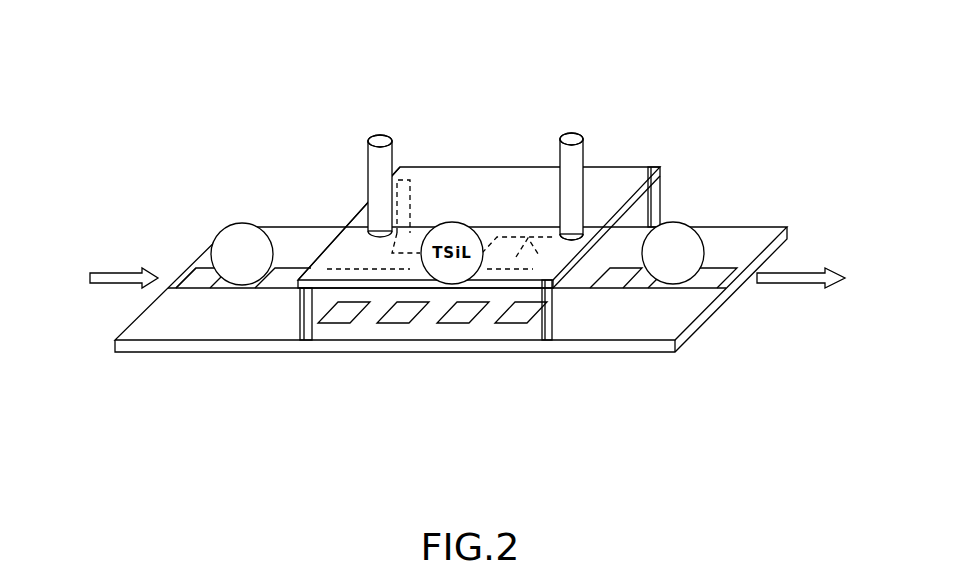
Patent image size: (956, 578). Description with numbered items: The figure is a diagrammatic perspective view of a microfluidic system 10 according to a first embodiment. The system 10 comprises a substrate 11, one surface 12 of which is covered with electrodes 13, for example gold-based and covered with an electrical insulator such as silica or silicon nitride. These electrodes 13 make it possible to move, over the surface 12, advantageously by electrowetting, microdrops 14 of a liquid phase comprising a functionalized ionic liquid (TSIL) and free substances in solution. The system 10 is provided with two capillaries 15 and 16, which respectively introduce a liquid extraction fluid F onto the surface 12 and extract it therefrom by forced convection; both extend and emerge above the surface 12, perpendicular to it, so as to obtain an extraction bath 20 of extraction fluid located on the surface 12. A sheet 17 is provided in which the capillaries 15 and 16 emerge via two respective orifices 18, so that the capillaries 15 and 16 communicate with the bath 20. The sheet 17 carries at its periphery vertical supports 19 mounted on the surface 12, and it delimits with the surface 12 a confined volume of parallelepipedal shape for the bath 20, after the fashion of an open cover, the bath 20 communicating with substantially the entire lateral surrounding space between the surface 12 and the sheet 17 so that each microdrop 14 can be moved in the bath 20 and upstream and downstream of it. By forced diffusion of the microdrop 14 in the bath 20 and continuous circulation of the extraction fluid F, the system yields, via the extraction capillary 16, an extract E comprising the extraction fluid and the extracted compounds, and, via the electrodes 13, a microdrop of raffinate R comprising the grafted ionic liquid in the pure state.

The microfluidic system 10 is at (282, 380).
The substrate 11 is at (138, 353).
The surface 12 is at (206, 334).
The electrodes 13 is at (195, 263).
The microdrops 14 is at (245, 222).
The capillary 15 is at (407, 140).
The capillary 16 is at (549, 140).
The sheet 17 is at (515, 206).
The orifices 18 is at (367, 230).
The vertical supports 19 is at (664, 207).
The extraction bath 20 is at (440, 300).
The extraction fluid F is at (374, 129).
The extract E is at (577, 138).
The raffinate R is at (678, 285).